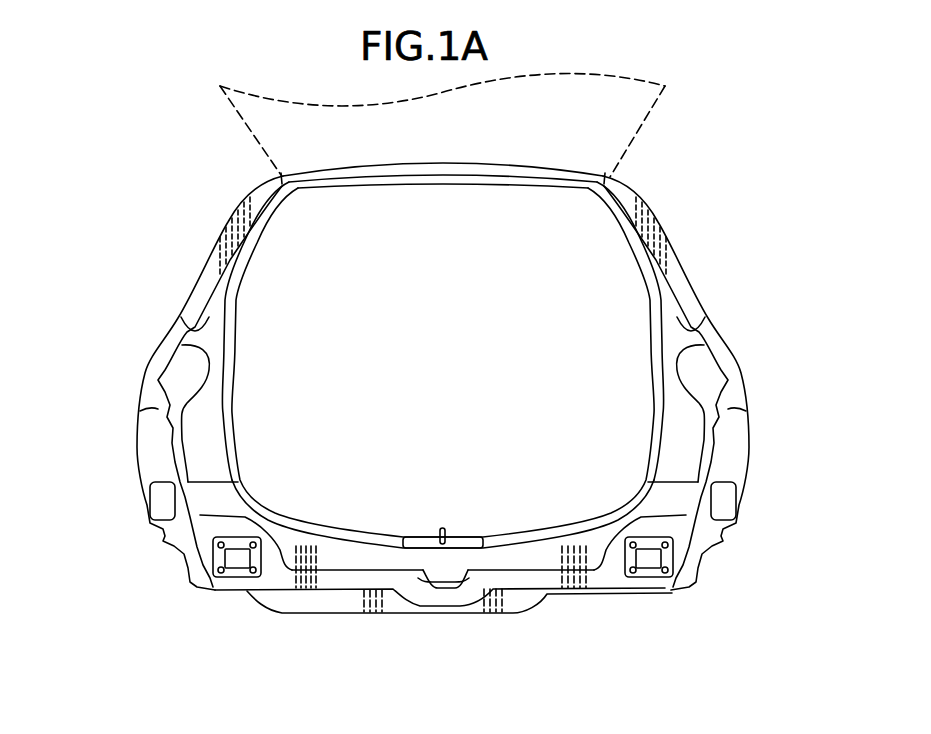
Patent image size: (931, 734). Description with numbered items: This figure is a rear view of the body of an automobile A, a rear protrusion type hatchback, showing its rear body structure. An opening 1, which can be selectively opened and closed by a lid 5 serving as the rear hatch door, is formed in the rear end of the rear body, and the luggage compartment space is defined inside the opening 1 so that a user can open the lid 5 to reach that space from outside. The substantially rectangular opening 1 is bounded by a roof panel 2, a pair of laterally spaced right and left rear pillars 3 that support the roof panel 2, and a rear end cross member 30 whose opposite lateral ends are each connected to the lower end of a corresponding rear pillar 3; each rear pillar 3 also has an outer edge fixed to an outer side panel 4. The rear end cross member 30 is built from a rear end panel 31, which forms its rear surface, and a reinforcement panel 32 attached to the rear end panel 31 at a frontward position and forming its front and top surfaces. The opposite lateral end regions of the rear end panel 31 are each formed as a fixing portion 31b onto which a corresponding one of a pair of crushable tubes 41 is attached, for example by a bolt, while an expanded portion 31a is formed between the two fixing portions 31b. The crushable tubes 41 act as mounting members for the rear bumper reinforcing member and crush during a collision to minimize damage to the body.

The automobile A is at (164, 236).
The opening 1 is at (452, 344).
The roof panel 2 is at (343, 187).
The rear pillar 3 is at (214, 415).
The outer side panel 4 is at (150, 433).
The lid 5 is at (635, 139).
The rear end cross member 30 is at (556, 518).
The rear end panel 31 is at (343, 555).
The expanded portion 31a is at (445, 572).
The fixing portion 31b is at (210, 558).
The reinforcement panel 32 is at (308, 525).
The crushable tube 41 is at (237, 577).